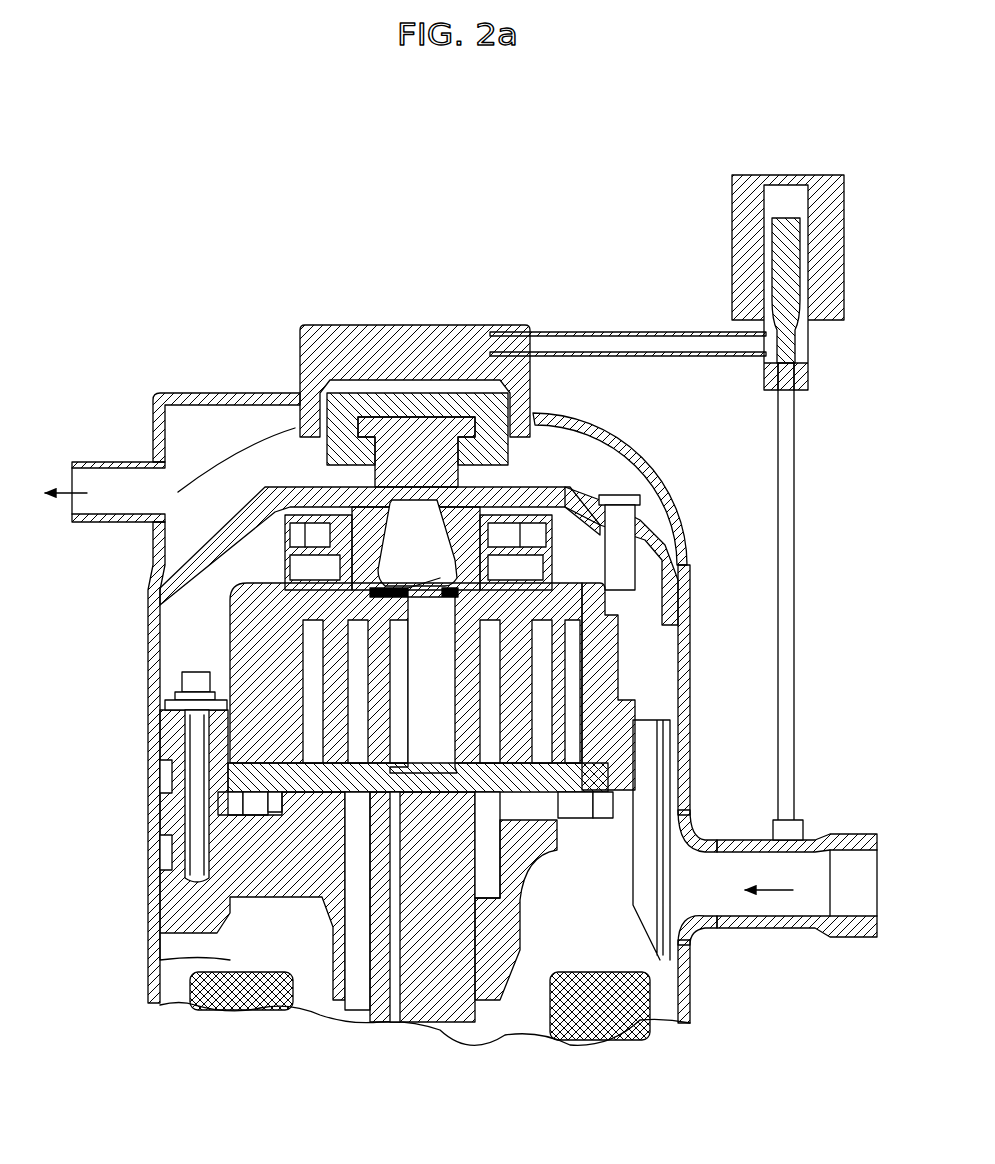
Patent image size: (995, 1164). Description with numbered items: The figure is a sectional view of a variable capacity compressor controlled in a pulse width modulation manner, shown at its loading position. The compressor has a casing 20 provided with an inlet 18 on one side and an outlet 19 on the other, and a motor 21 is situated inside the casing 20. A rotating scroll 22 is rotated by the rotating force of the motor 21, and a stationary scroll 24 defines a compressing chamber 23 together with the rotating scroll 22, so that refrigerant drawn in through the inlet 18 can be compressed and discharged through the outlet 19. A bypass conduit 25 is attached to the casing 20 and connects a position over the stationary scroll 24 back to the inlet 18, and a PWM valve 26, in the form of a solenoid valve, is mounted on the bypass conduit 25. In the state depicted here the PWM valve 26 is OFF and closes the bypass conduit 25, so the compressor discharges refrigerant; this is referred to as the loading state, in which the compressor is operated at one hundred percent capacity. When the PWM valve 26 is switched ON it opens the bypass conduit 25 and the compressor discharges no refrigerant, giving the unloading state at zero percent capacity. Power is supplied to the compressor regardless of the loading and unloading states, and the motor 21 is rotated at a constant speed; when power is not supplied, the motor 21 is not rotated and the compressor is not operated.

The inlet 18 is at (826, 840).
The outlet 19 is at (97, 463).
The casing 20 is at (150, 830).
The motor 21 is at (195, 970).
The rotating scroll 22 is at (230, 783).
The compressing chamber 23 is at (310, 718).
The stationary scroll 24 is at (245, 643).
The bypass conduit 25 is at (800, 436).
The PWM valve 26 is at (838, 248).